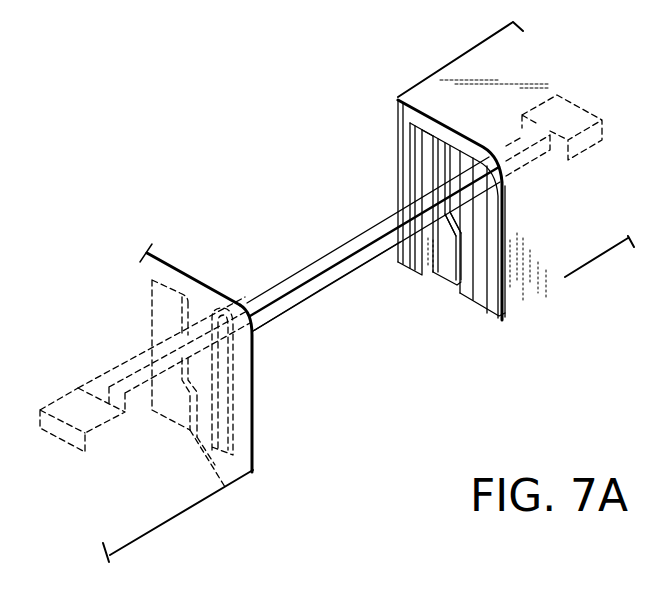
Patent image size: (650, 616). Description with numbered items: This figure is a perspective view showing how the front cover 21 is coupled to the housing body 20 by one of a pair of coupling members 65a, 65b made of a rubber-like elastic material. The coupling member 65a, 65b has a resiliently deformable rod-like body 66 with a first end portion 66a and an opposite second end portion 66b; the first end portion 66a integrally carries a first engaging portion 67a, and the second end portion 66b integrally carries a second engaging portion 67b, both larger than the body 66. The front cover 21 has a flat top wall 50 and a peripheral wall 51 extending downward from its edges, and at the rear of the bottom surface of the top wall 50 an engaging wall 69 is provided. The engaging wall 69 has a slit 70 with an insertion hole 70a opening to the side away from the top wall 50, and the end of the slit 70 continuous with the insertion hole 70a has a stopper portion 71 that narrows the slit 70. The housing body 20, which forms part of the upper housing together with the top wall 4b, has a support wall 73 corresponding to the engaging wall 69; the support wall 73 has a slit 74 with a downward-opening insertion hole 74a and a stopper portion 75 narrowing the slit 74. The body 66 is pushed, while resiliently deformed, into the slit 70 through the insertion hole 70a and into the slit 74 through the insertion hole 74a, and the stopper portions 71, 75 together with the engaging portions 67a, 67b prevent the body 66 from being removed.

The top wall 4b is at (480, 72).
The slit 74 is at (452, 157).
The insertion hole 74a is at (463, 277).
The support wall 73 is at (480, 257).
The stopper portion 75 is at (443, 240).
The housing body 20 is at (597, 240).
The rod-like body 66 is at (330, 255).
The coupling member 65a is at (317, 285).
The coupling member 65b is at (360, 266).
The second end portion 66b is at (540, 155).
The second engaging portion 67b is at (580, 110).
The top wall 50 is at (157, 252).
The front cover 21 is at (217, 288).
The peripheral wall 51 is at (165, 493).
The engaging wall 69 is at (222, 393).
The slit 70 is at (182, 320).
The stopper portion 71 is at (177, 410).
The insertion hole 70a is at (225, 487).
The first end portion 66a is at (107, 395).
The first engaging portion 67a is at (65, 428).